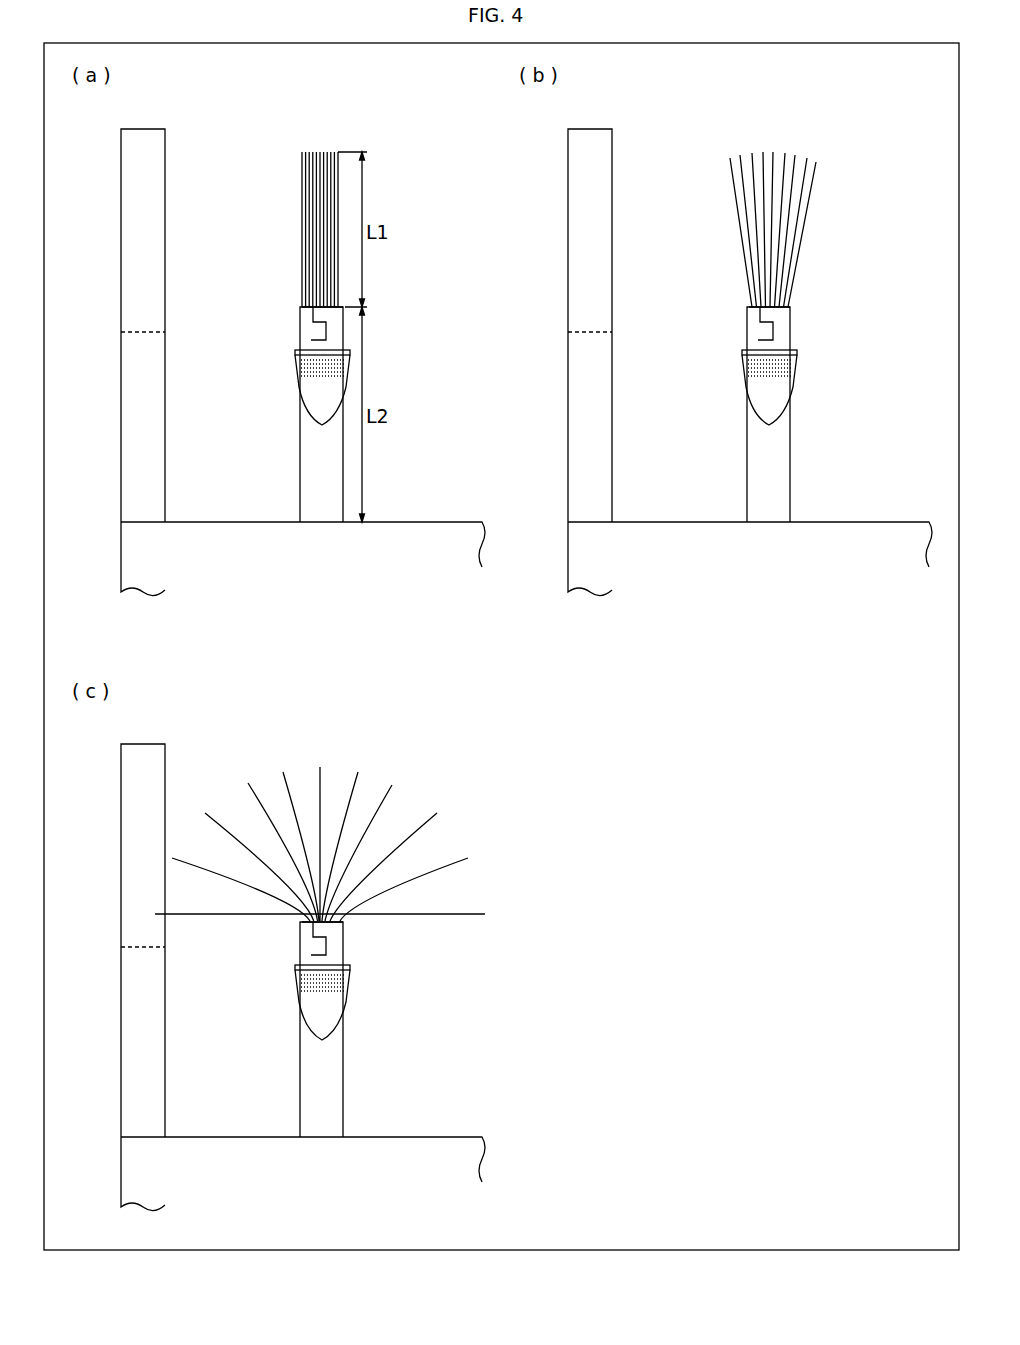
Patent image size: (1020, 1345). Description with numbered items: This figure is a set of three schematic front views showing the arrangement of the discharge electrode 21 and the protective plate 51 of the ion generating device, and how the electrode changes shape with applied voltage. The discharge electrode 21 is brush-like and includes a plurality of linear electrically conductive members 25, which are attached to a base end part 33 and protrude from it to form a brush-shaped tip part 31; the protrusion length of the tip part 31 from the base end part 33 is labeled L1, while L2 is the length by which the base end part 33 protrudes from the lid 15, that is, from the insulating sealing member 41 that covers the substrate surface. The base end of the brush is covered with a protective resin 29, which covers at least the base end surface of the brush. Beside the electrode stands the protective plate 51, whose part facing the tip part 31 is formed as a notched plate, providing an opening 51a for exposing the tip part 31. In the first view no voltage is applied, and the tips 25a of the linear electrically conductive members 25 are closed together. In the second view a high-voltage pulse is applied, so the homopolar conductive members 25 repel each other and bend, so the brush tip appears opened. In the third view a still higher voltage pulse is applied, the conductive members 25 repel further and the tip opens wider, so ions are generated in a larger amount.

The lid 15 is at (526, 838).
The insulating sealing member 41 is at (413, 522).
The discharge electrode 21 is at (350, 128).
The linear electrically conductive members 25 is at (494, 522).
The tips of the linear electrically conductive members 25a is at (302, 153).
The protective resin 29 is at (294, 360).
The tip part 31 is at (472, 690).
The base end part 33 is at (287, 400).
The protective plate 51 is at (147, 129).
The opening 51a is at (122, 332).